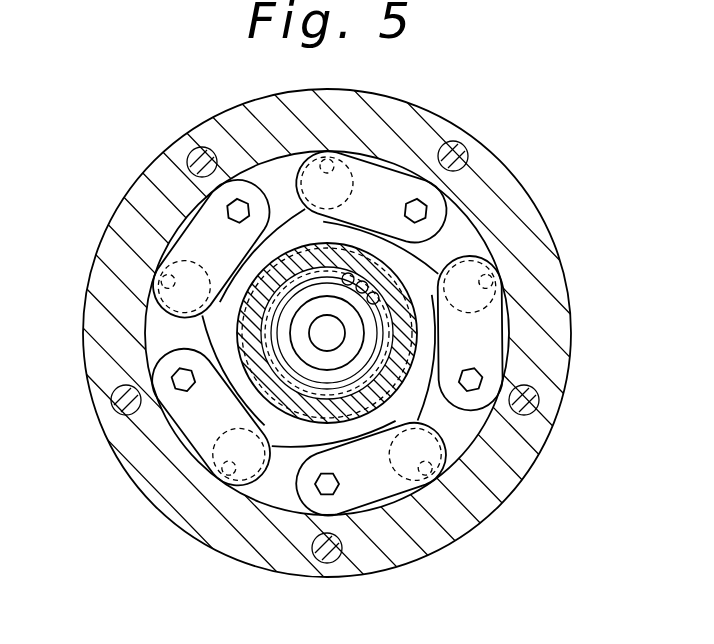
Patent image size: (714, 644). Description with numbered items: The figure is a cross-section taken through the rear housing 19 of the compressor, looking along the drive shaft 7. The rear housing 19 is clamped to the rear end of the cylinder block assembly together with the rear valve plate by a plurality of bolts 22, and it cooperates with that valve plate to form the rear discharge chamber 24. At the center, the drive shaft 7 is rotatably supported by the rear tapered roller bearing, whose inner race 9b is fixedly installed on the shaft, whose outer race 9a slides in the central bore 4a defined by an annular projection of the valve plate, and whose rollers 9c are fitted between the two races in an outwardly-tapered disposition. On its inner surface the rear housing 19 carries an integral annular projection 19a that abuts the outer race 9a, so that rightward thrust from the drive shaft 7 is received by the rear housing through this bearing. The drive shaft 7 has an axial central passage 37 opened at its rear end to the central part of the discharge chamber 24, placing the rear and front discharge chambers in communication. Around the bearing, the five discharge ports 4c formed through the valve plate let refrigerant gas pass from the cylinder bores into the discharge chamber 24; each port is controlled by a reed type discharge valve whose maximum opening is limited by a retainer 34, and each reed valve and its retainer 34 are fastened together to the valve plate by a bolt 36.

The rear housing 19 is at (532, 214).
The annular projection 19a is at (217, 327).
The bolts 22 is at (200, 152).
The retainer 34 is at (185, 255).
The bolt 36 is at (238, 205).
The discharge ports 4c is at (155, 295).
The central bore 4a is at (283, 252).
The discharge chamber 24 is at (469, 252).
The outer race 9a is at (184, 226).
The inner race 9b is at (296, 370).
The rollers 9c is at (490, 265).
The drive shaft 7 is at (364, 352).
The axial central passage 37 is at (335, 348).